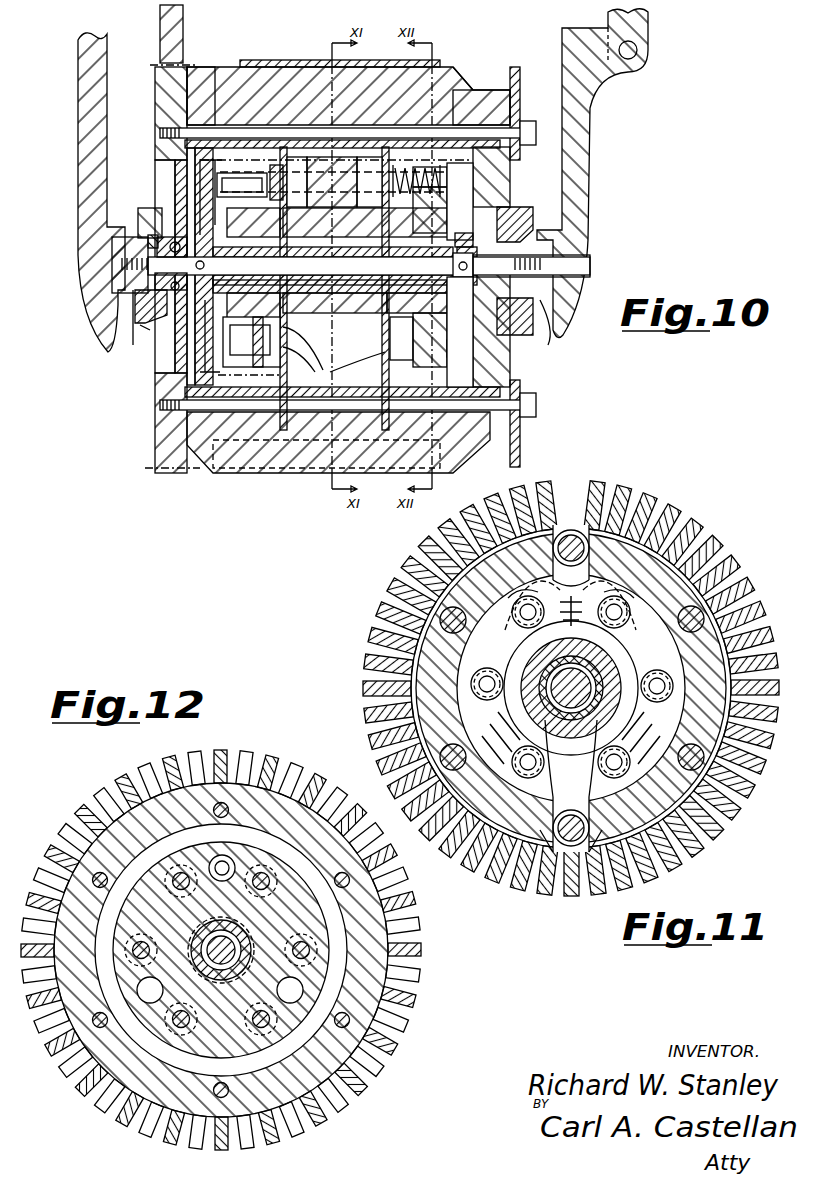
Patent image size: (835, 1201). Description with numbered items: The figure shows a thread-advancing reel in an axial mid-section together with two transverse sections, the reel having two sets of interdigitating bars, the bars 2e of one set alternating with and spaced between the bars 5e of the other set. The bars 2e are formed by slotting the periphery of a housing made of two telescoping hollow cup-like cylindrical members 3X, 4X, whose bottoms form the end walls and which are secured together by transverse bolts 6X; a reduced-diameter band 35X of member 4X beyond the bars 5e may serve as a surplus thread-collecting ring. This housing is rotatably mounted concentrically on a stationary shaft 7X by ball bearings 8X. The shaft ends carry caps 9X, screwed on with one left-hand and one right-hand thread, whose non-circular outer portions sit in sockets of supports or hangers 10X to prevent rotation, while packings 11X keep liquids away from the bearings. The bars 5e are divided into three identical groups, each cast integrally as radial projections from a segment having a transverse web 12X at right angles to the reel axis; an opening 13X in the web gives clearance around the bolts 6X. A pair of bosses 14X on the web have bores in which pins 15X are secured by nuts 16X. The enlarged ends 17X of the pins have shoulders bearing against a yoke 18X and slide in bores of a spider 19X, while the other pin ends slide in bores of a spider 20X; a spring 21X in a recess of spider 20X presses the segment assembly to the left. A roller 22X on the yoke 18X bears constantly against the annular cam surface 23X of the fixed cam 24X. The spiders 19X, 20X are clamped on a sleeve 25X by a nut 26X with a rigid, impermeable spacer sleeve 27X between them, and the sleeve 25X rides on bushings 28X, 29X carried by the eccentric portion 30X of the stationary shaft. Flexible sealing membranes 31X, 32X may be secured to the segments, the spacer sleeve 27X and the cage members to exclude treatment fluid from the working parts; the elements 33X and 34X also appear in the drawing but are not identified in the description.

In FIG. 10, the bars 2e is at (233, 76).
In FIG. 11, the bars 2e is at (664, 520).
In FIG. 12, the bars 2e is at (268, 770).
In FIG. 10, the hollow cup-like cylindrical member 3X is at (462, 100).
In FIG. 12, the hollow cup-like cylindrical member 3X is at (145, 828).
In FIG. 10, the hollow cup-like cylindrical member 4X is at (205, 88).
In FIG. 10, the bars 5e is at (290, 62).
In FIG. 11, the bars 5e is at (696, 540).
In FIG. 12, the bars 5e is at (250, 752).
In FIG. 10, the bolts 6X is at (500, 134).
In FIG. 11, the bolts 6X is at (572, 535).
In FIG. 12, the bolts 6X is at (210, 812).
In FIG. 10, the stationary shaft 7X is at (470, 296).
In FIG. 12, the stationary shaft 7X is at (198, 952).
In FIG. 10, the ball bearings 8X is at (482, 236).
In FIG. 10, the caps 9X is at (533, 236).
In FIG. 10, the supports or hangers 10X is at (86, 182).
In FIG. 10, the packings 11X is at (346, 325).
In FIG. 10, the transverse web 12X is at (432, 370).
In FIG. 11, the transverse web 12X is at (600, 818).
In FIG. 10, the opening 13X is at (332, 182).
In FIG. 11, the opening 13X is at (598, 610).
In FIG. 10, the bosses 14X is at (352, 212).
In FIG. 11, the bosses 14X is at (640, 560).
In FIG. 10, the pins 15X is at (462, 201).
In FIG. 12, the pins 15X is at (300, 948).
In FIG. 10, the nuts 16X is at (412, 178).
In FIG. 12, the nuts 16X is at (128, 948).
In FIG. 10, the enlarged ends 17X is at (262, 343).
In FIG. 11, the enlarged ends 17X is at (518, 624).
In FIG. 10, the yoke 18X is at (338, 214).
In FIG. 11, the yoke 18X is at (532, 586).
In FIG. 10, the spider 19X is at (249, 375).
In FIG. 11, the spider 19X is at (524, 652).
In FIG. 10, the spider 20X is at (445, 190).
In FIG. 10, the spring 21X is at (428, 168).
In FIG. 12, the spring 21X is at (232, 862).
In FIG. 10, the roller 22X is at (228, 165).
In FIG. 11, the roller 22X is at (590, 600).
In FIG. 10, the annular cam surface 23X is at (224, 170).
In FIG. 10, the fixed cam 24X is at (195, 210).
In FIG. 10, the sleeve 25X is at (395, 212).
In FIG. 11, the sleeve 25X is at (628, 672).
In FIG. 12, the sleeve 25X is at (210, 930).
In FIG. 10, the nut 26X is at (205, 341).
In FIG. 11, the nut 26X is at (612, 660).
In FIG. 10, the spacer sleeve 27X is at (239, 264).
In FIG. 10, the bushing 28X is at (177, 265).
In FIG. 11, the bushing 28X is at (571, 708).
In FIG. 12, the bushing 28X is at (224, 980).
In FIG. 10, the bushing 29X is at (506, 266).
In FIG. 10, the eccentric portion 30X is at (427, 265).
In FIG. 11, the eccentric portion 30X is at (571, 758).
In FIG. 12, the eccentric portion 30X is at (230, 935).
In FIG. 10, the flexible sealing membrane 31X is at (312, 349).
In FIG. 10, the flexible sealing membrane 32X is at (371, 351).
In FIG. 10, the mounting flange 33X is at (176, 32).
In FIG. 10, the end wall 34X is at (160, 105).
In FIG. 10, the band 35X is at (500, 92).